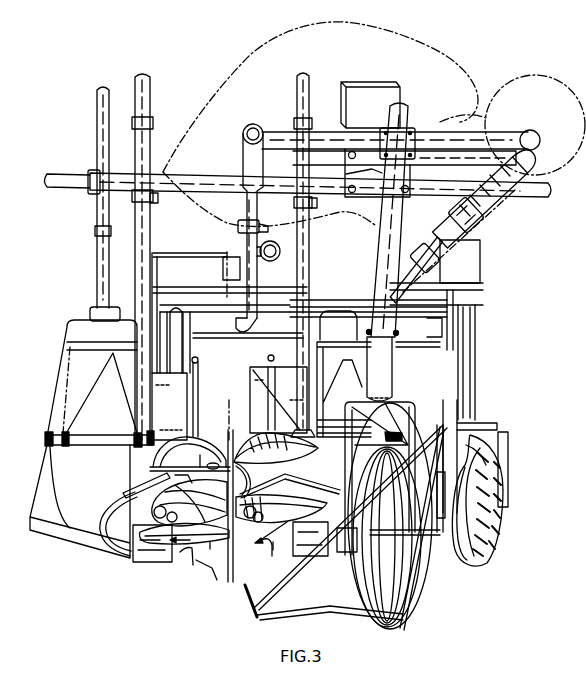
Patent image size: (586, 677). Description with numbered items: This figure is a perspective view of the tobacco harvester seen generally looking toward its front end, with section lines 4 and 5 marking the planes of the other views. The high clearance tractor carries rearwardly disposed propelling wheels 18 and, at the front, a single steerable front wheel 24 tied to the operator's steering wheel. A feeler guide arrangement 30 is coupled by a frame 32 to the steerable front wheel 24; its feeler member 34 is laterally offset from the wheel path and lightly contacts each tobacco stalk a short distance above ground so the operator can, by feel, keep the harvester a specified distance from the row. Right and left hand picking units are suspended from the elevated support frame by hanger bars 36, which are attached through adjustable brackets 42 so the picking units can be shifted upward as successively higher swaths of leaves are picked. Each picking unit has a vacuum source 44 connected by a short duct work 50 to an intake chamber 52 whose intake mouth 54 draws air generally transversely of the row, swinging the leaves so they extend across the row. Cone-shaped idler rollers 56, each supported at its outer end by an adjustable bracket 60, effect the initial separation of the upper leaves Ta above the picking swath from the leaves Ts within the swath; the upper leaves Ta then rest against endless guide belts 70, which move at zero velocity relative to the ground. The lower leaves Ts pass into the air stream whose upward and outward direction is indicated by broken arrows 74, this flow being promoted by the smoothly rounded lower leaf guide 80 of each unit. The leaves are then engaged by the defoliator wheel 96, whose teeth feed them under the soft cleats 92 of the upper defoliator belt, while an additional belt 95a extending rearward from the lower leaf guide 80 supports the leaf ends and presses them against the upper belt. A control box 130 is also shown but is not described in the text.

The section line 4- 4 is at (32, 345).
The section line 5- 5 is at (227, 234).
The propelling wheels 18 is at (467, 532).
The steerable front wheel 24 is at (413, 598).
The feeler guide arrangement 30 is at (283, 617).
The frame 32 is at (290, 578).
The feeler member 34 is at (244, 590).
The hanger bars 36 is at (152, 232).
The adjustable brackets 42 is at (156, 203).
The vacuum source 44 is at (323, 320).
The duct work 50 is at (63, 397).
The intake chamber 52 is at (70, 542).
The intake mouth 54 is at (150, 471).
The idler rollers 56 is at (250, 462).
The adjustable bracket 60 is at (117, 502).
The guide belts 70 is at (248, 440).
The broken arrows 74 is at (216, 579).
The lower leaf guide 80 is at (221, 560).
The cleats 92 is at (136, 489).
The additional belt 95a is at (152, 562).
The defoliator wheel 96 is at (256, 540).
The control box 130 is at (183, 417).
The leaves above the picking swath Ta is at (173, 475).
The leaves within the picking swath Ts is at (228, 545).